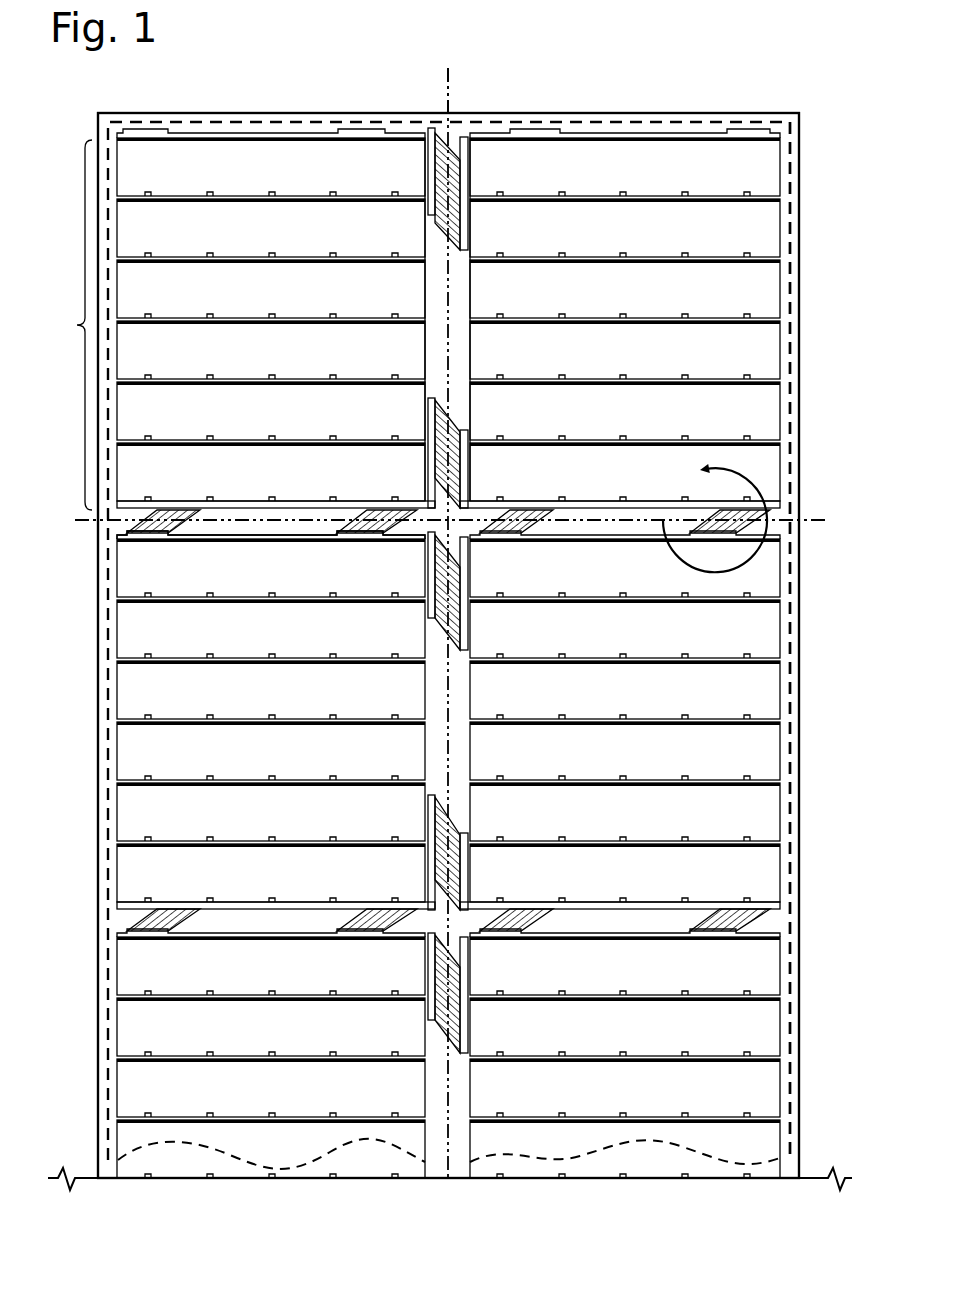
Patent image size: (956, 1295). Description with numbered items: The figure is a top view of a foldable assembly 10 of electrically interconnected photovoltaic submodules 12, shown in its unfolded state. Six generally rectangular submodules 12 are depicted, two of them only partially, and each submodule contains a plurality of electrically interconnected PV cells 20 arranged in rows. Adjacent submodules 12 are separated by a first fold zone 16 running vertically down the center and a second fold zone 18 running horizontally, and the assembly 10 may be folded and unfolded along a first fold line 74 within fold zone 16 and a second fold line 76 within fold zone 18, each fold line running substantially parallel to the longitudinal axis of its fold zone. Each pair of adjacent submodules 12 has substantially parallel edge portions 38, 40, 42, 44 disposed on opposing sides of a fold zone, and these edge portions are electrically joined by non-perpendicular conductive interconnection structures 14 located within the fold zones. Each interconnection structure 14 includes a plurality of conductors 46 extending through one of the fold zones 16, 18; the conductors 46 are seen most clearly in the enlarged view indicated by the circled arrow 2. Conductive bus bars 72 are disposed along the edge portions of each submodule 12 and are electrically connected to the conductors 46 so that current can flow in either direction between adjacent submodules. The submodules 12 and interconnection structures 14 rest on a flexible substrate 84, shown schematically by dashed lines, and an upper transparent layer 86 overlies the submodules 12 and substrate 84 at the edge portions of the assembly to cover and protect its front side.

The foldable assembly 10 is at (770, 85).
The PV submodule 12 is at (237, 319).
The conductive interconnection structure 14 is at (435, 227).
The first fold zone 16 is at (462, 112).
The second fold zone 18 is at (795, 492).
The PV cell 20 is at (279, 176).
The section view indicator 2 is at (715, 512).
The edge portion 38 is at (432, 292).
The edge portion 40 is at (462, 356).
The edge portion 42 is at (245, 503).
The edge portion 44 is at (322, 540).
The conductor 46 is at (463, 150).
The conductive bus bar 72 is at (590, 136).
The first fold line 74 is at (442, 104).
The second fold line 76 is at (813, 537).
The flexible substrate 84 is at (630, 128).
The upper transparent layer 86 is at (733, 118).